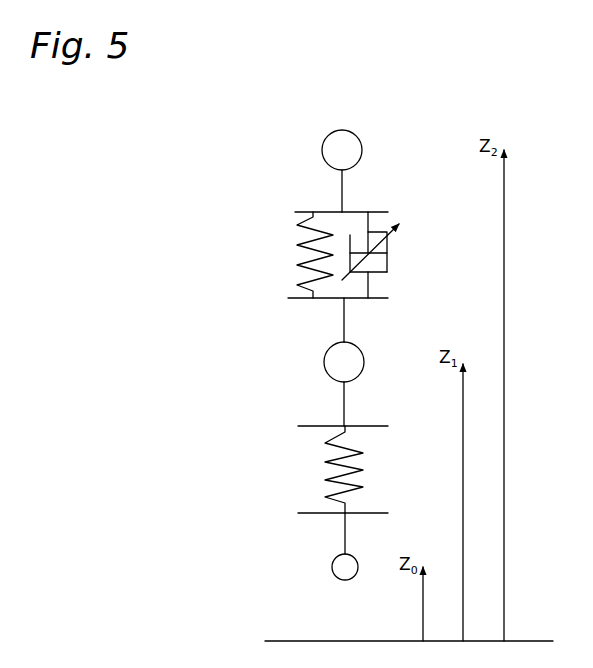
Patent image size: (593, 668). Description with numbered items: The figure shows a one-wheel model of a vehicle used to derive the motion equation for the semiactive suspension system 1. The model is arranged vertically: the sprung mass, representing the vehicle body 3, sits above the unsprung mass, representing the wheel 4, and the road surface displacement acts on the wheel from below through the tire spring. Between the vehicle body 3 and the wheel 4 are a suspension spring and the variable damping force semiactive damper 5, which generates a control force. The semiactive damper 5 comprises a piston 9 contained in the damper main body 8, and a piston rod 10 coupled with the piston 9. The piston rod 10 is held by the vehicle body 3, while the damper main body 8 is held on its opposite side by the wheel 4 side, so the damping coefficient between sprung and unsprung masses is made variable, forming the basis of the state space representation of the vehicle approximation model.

The semiactive suspension system 1 is at (398, 160).
The vehicle body 3 is at (292, 128).
The wheel 4 is at (293, 298).
The semiactive damper 5 is at (415, 215).
The damper main body 8 is at (404, 237).
The piston 9 is at (374, 285).
The piston rod 10 is at (378, 232).